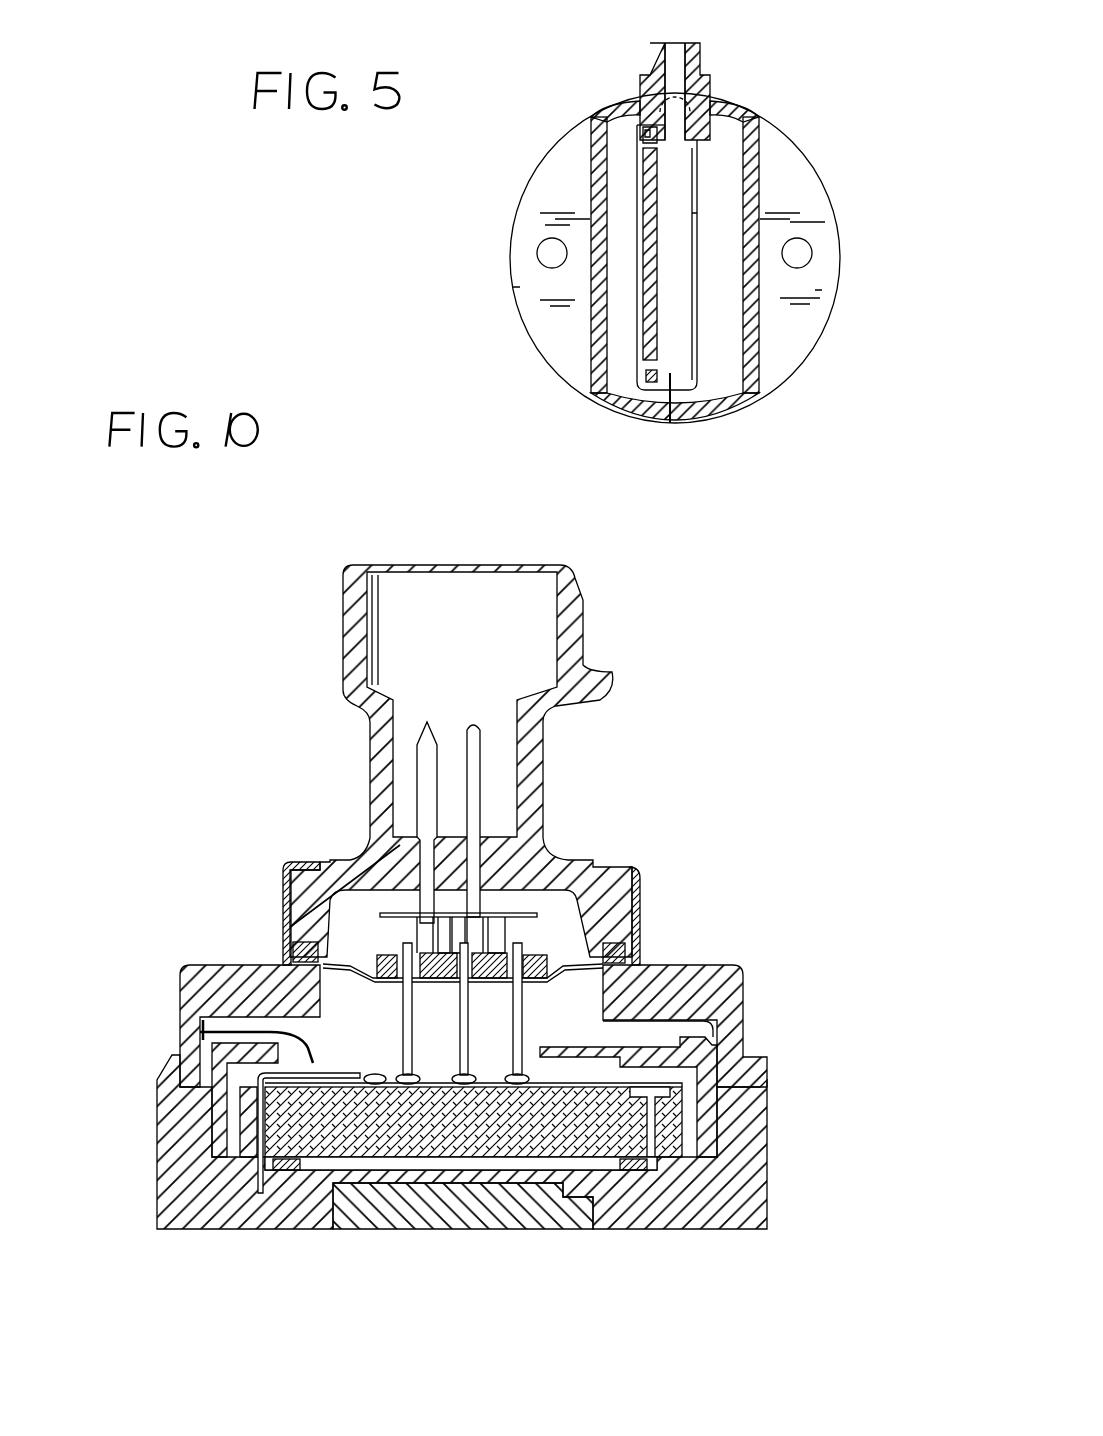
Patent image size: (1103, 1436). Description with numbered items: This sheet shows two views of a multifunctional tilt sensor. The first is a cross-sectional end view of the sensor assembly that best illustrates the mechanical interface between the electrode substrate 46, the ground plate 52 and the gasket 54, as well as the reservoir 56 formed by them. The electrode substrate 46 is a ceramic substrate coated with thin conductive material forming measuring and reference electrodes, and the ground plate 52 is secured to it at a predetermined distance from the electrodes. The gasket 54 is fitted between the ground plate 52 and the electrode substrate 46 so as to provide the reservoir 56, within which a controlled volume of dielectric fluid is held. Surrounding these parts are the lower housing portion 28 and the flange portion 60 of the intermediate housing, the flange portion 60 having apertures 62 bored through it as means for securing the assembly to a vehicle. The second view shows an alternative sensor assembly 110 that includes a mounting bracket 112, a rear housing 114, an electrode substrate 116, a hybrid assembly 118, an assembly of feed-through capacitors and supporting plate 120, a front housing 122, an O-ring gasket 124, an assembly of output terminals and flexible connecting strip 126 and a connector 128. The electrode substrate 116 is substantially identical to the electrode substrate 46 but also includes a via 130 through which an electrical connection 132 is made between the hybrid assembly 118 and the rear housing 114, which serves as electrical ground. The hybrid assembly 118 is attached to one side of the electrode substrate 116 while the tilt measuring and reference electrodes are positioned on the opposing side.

In FIG. 5, the lower housing portion 28 is at (693, 427).
In FIG. 5, the electrode substrate 46 is at (652, 467).
In FIG. 5, the ground plate 52 is at (637, 323).
In FIG. 5, the gasket 54 is at (640, 373).
In FIG. 5, the reservoir 56 is at (527, 98).
In FIG. 5, the flange portion 60 is at (520, 287).
In FIG. 5, the apertures 62 is at (540, 248).
In FIG. 10, the sensor assembly 110 is at (752, 694).
In FIG. 10, the mounting bracket 112 is at (532, 1229).
In FIG. 10, the rear housing 114 is at (217, 1222).
In FIG. 10, the electrode substrate 116 is at (678, 1133).
In FIG. 10, the hybrid assembly 118 is at (625, 962).
In FIG. 10, the assembly of feed-through capacitors and supporting plate 120 is at (105, 982).
In FIG. 10, the front housing 122 is at (550, 1083).
In FIG. 10, the O-ring gasket 124 is at (293, 947).
In FIG. 10, the assembly of output terminals and flexible connecting strip 126 is at (288, 790).
In FIG. 10, the connector 128 is at (587, 673).
In FIG. 10, the via 130 is at (262, 1091).
In FIG. 10, the electrical connection 132 is at (200, 1032).